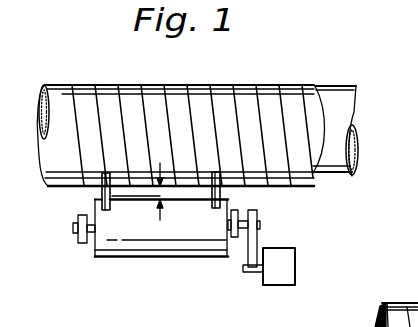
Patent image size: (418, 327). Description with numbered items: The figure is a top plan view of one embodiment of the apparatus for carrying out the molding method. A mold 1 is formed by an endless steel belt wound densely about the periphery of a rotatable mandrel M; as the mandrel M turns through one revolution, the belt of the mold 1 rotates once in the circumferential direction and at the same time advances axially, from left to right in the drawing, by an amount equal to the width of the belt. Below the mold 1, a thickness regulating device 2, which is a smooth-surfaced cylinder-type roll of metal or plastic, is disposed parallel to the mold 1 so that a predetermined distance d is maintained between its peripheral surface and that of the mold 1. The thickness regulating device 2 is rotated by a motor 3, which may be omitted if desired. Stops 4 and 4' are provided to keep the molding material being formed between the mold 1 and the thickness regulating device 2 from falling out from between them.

The mold 1 is at (82, 91).
The mandrel M is at (345, 102).
The thickness regulating device 2 is at (208, 256).
The motor 3 is at (286, 283).
The stop 4 is at (77, 198).
The stop 4' is at (254, 195).
The predetermined distance d is at (160, 190).